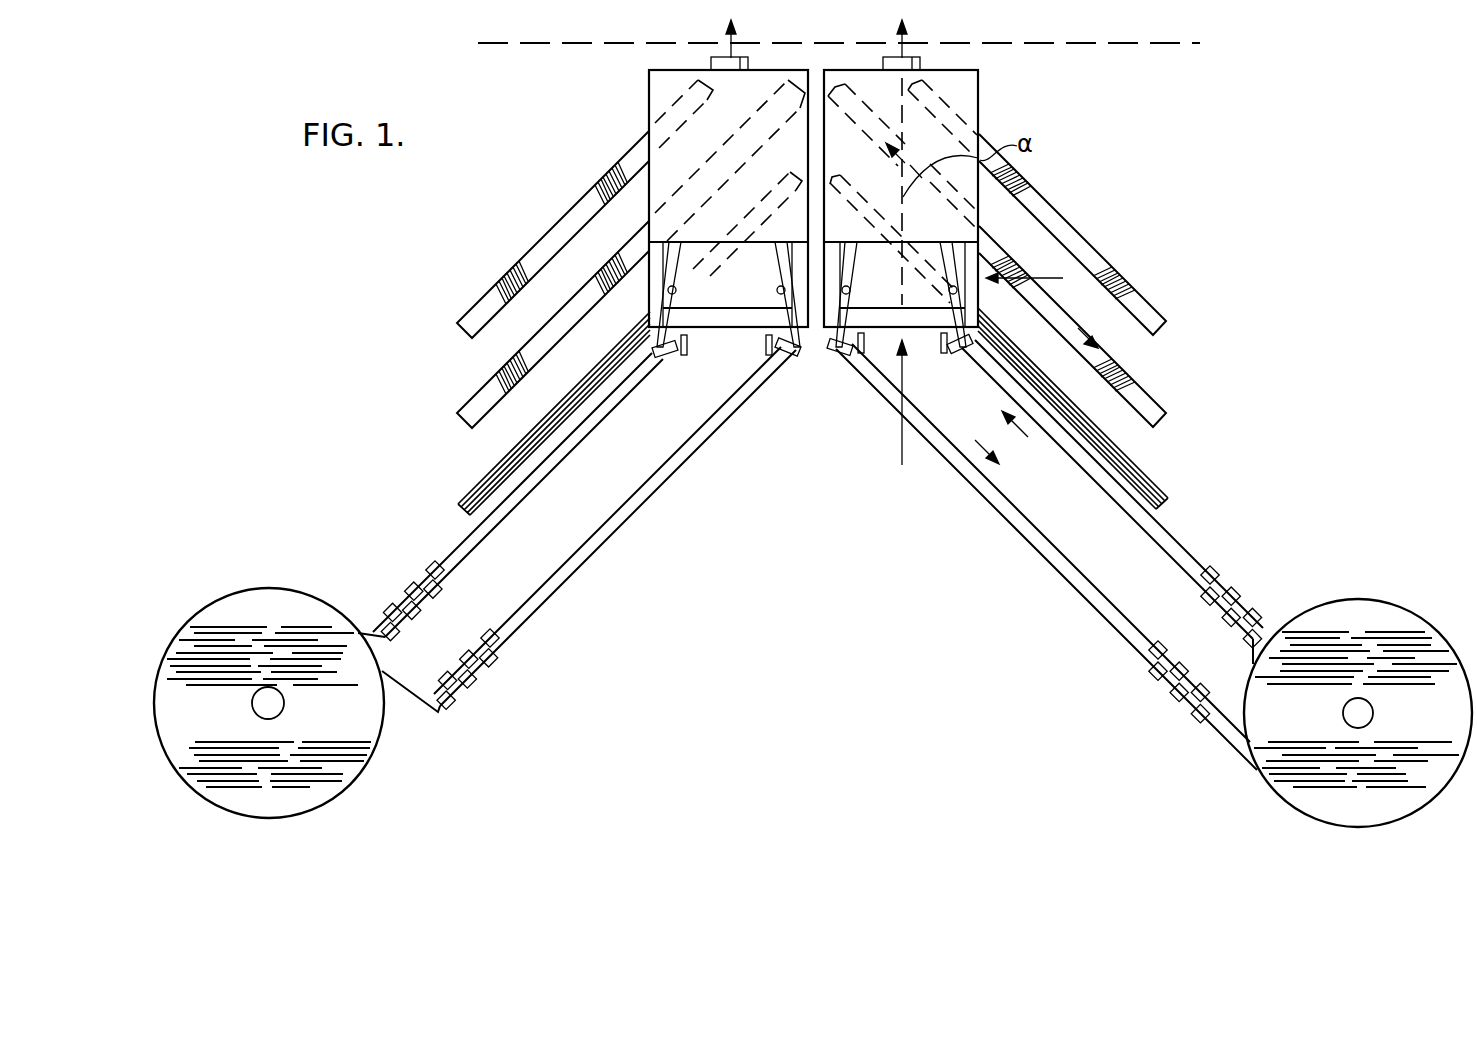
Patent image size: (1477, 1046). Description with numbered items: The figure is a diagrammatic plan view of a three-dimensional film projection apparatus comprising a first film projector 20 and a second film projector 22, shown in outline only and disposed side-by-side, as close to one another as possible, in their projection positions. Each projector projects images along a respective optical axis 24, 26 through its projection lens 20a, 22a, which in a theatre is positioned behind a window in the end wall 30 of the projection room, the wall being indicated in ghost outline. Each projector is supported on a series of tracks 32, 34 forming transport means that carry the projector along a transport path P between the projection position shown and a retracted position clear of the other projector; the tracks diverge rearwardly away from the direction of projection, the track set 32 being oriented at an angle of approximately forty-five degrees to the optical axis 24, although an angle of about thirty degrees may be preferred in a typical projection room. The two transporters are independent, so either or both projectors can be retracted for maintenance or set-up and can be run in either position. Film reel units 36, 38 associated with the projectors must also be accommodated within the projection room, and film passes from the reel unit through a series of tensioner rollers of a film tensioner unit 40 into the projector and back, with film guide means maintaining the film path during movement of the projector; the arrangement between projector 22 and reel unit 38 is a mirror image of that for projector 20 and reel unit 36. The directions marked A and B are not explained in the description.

The first film projector 20 is at (968, 62).
The projection lens 20a is at (920, 62).
The second film projector 22 is at (797, 62).
The projection lens 22a is at (710, 63).
The optical axis 24 is at (903, 45).
The optical axis 26 is at (733, 45).
The end wall of the projection room 30 is at (1190, 42).
The tracks 32 is at (1078, 212).
The tracks 34 is at (503, 255).
The film reel unit 36 is at (1381, 618).
The film reel unit 38 is at (266, 608).
The film tensioner unit 40 is at (1266, 588).
The transport path P is at (1012, 268).
The direction A is at (1055, 278).
The direction B is at (900, 437).